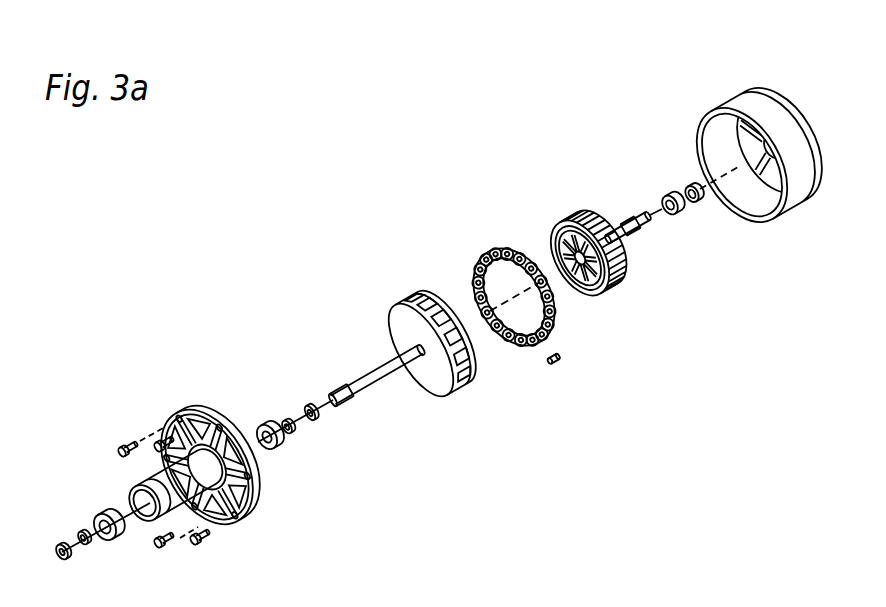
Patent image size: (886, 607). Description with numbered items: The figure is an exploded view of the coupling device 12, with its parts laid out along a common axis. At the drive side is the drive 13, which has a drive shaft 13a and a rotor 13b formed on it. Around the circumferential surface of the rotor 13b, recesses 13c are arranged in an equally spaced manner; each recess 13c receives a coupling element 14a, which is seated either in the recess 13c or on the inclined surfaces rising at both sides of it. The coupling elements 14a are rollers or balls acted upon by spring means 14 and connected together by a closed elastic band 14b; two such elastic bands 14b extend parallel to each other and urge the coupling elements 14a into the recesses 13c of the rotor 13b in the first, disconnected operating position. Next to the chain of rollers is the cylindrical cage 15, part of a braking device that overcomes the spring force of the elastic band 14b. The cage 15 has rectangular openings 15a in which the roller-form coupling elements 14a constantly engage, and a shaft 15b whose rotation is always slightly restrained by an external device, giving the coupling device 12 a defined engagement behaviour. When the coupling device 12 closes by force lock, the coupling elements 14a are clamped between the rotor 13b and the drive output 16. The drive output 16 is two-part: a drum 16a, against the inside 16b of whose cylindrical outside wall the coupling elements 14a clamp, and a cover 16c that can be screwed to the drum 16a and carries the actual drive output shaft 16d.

The coupling device 12 is at (268, 286).
The drive 13 is at (615, 293).
The drive shaft 13a is at (643, 213).
The rotor 13b is at (578, 208).
The recesses 13c is at (618, 276).
The spring means 14 is at (553, 366).
The coupling elements 14a is at (481, 270).
The closed elastic band 14b is at (527, 257).
The cylindrical cage 15 is at (460, 395).
The rectangular openings 15a is at (425, 297).
The shaft 15b is at (340, 390).
The drive output 16 is at (802, 212).
The drum 16a is at (792, 147).
The inside of the cylindrical outside wall 16b is at (723, 137).
The cover 16c is at (185, 415).
The drive output shaft 16d is at (143, 485).